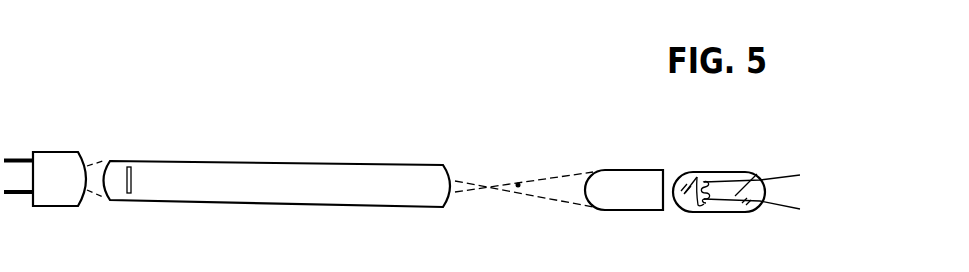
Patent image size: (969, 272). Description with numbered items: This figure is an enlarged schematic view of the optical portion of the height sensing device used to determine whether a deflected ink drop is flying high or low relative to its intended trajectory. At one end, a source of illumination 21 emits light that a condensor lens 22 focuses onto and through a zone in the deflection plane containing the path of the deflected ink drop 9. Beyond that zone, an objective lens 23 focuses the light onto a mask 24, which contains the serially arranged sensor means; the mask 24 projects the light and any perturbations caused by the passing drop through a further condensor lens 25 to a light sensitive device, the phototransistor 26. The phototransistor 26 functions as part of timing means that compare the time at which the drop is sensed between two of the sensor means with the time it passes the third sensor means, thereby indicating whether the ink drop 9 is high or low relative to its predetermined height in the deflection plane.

The ink drop 9 is at (520, 183).
The source of illumination 21 is at (722, 173).
The condensor lens 22 is at (632, 175).
The objective lens 23 is at (413, 165).
The mask 24 is at (132, 182).
The condensor lens 25 is at (118, 163).
The phototransistor 26 is at (66, 152).